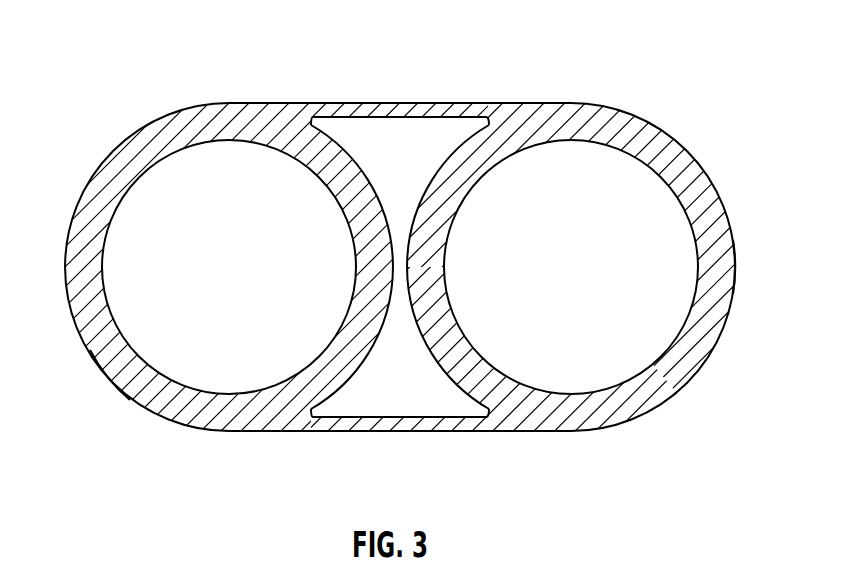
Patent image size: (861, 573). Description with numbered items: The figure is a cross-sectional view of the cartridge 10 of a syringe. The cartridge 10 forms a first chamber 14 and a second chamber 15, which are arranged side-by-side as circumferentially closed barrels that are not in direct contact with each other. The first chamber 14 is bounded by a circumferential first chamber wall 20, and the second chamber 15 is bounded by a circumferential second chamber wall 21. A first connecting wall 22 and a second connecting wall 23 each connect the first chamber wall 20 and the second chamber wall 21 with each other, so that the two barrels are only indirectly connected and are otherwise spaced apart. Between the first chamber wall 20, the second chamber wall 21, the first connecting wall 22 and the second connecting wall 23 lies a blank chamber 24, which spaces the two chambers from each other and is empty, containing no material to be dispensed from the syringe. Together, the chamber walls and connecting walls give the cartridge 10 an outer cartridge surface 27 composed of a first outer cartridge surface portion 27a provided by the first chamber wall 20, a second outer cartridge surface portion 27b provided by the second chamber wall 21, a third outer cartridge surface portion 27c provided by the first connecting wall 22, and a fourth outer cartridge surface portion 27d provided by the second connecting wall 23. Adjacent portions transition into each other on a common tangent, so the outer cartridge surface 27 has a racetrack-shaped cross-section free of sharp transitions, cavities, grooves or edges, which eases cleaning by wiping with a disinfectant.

The cartridge 10 is at (430, 253).
The first chamber 14 is at (579, 162).
The second chamber 15 is at (217, 162).
The first chamber wall 20 is at (606, 234).
The second chamber wall 21 is at (196, 232).
The first connecting wall 22 is at (366, 112).
The second connecting wall 23 is at (375, 423).
The blank chamber 24 is at (368, 131).
The outer cartridge surface 27 is at (594, 436).
The first outer cartridge surface portion 27a is at (737, 286).
The second outer cartridge surface portion 27b is at (112, 382).
The third outer cartridge surface portion 27c is at (420, 103).
The fourth outer cartridge surface portion 27d is at (323, 431).